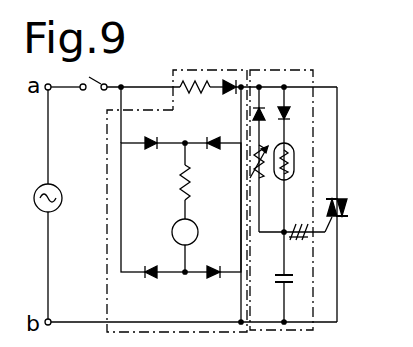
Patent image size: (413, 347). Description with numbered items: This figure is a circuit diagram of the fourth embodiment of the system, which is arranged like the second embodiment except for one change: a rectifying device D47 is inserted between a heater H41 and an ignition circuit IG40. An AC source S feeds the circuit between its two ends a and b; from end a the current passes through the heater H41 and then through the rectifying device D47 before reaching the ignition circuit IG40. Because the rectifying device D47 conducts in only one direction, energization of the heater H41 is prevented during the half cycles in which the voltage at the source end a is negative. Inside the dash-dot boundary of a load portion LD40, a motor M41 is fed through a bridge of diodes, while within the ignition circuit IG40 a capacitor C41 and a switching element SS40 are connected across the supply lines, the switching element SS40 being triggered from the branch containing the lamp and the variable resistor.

The heater H41 is at (194, 72).
The load circuit LD40 is at (222, 72).
The rectifying device D47 is at (232, 70).
The ignition circuit IG40 is at (302, 70).
The triac switch SS40 is at (364, 206).
The motor M41 is at (172, 226).
The capacitor C41 is at (295, 277).
The AC power source S is at (40, 187).